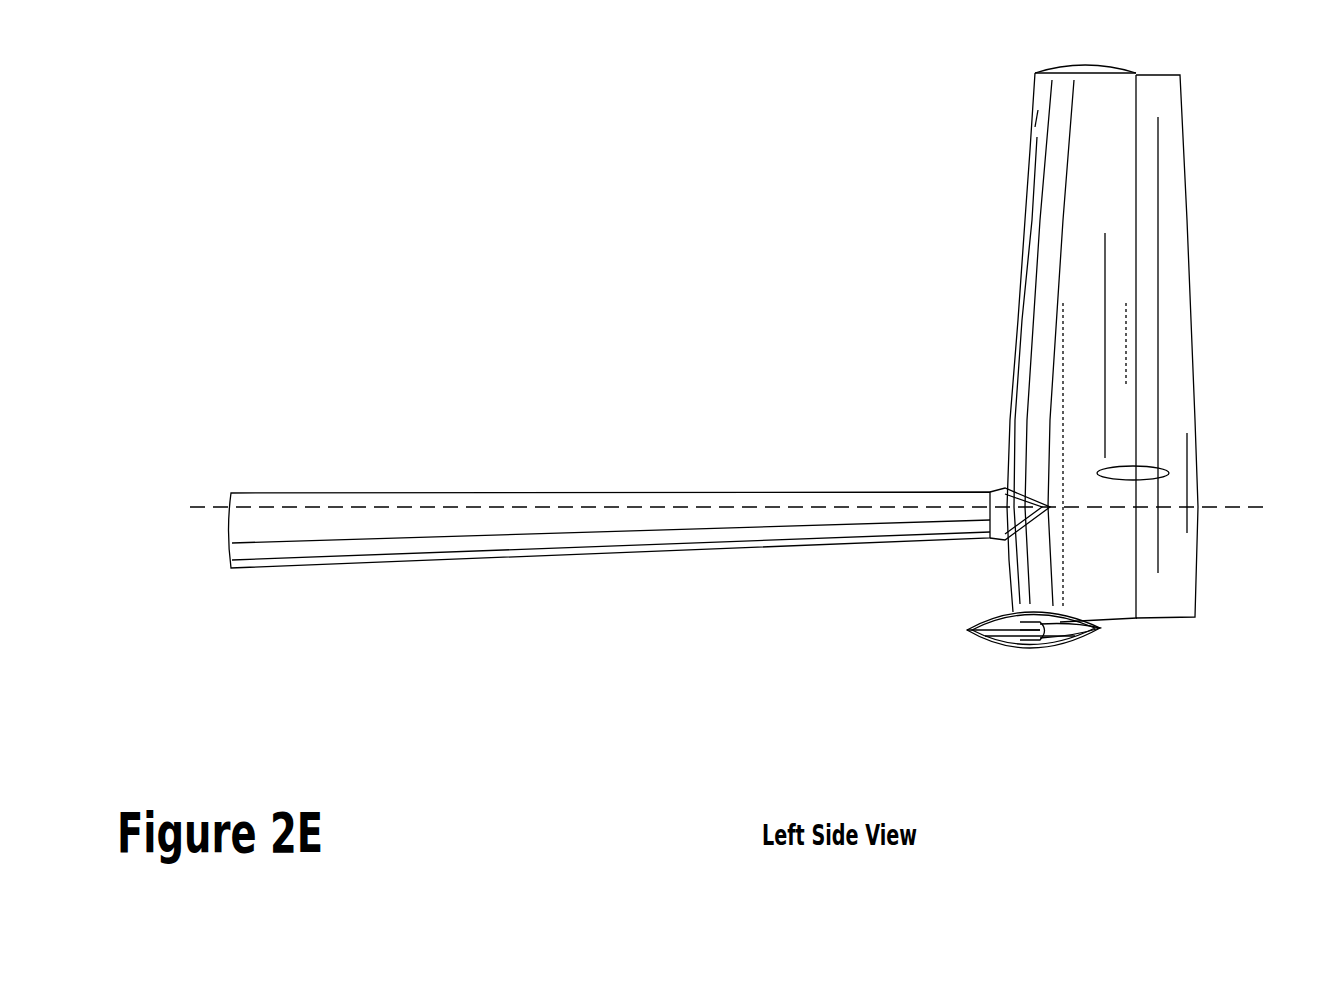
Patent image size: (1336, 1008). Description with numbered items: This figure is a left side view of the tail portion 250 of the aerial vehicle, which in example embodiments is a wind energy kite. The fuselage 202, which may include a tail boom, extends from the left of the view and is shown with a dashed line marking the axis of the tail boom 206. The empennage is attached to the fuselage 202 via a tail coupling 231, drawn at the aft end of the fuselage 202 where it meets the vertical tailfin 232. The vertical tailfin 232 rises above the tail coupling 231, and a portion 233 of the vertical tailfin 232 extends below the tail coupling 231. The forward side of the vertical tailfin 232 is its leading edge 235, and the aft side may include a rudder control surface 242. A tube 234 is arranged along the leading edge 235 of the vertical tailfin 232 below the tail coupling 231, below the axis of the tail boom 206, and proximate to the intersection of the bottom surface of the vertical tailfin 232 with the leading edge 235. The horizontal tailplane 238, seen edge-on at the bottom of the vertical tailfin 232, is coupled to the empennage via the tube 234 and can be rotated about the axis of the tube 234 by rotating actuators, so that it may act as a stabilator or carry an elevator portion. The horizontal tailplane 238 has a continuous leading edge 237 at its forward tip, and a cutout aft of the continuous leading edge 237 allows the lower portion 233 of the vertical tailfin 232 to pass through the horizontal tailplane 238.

The fuselage 202 is at (623, 553).
The axis of the tail boom 206 is at (1223, 507).
The tail coupling 231 is at (990, 492).
The vertical tailfin 232 is at (1058, 68).
The portion of the vertical tailfin 233 is at (996, 586).
The tube 234 is at (1020, 640).
The leading edge 235 is at (1020, 270).
The continuous leading edge 237 is at (965, 630).
The horizontal tailplane 238 is at (1063, 645).
The rudder control surface 242 is at (1193, 362).
The tail portion 250 is at (562, 211).